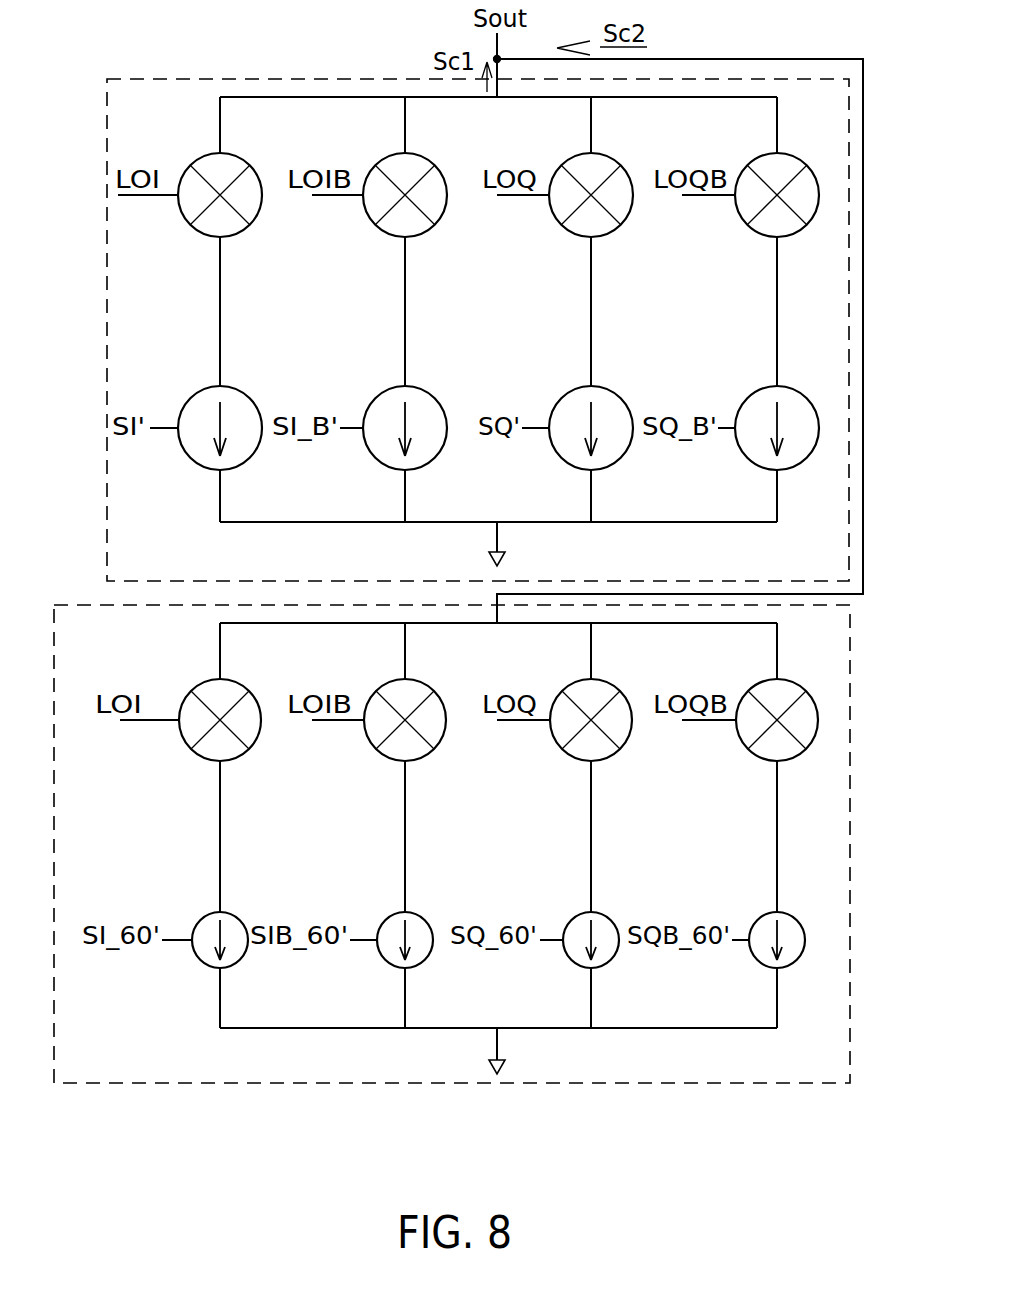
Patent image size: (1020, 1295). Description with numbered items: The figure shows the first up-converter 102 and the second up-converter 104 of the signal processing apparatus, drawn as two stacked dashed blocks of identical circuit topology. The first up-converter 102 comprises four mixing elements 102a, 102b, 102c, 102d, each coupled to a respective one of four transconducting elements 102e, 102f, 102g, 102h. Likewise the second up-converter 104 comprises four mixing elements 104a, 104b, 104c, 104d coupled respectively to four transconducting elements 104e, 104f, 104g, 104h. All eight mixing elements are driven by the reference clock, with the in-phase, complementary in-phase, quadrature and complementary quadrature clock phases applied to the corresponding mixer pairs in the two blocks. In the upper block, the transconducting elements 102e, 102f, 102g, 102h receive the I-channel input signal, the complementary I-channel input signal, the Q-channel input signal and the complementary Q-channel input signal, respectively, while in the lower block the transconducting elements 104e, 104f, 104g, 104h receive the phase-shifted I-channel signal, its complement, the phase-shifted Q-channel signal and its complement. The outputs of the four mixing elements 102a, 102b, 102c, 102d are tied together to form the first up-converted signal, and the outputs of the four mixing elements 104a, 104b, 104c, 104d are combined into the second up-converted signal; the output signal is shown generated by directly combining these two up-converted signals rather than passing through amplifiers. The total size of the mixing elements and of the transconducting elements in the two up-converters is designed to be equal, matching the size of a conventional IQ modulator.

The first up-converter 102 is at (357, 79).
The mixing element 102a is at (283, 147).
The mixing element 102b is at (472, 147).
The mixing element 102c is at (658, 147).
The mixing element 102d is at (805, 166).
The transconducting element 102e is at (190, 458).
The transconducting element 102f is at (375, 458).
The transconducting element 102g is at (561, 458).
The transconducting element 102h is at (747, 458).
The second up-converter 104 is at (362, 1083).
The mixing element 104a is at (283, 672).
The mixing element 104b is at (472, 672).
The mixing element 104c is at (658, 672).
The mixing element 104d is at (805, 691).
The transconducting element 104e is at (200, 962).
The transconducting element 104f is at (385, 962).
The transconducting element 104g is at (571, 962).
The transconducting element 104h is at (757, 962).